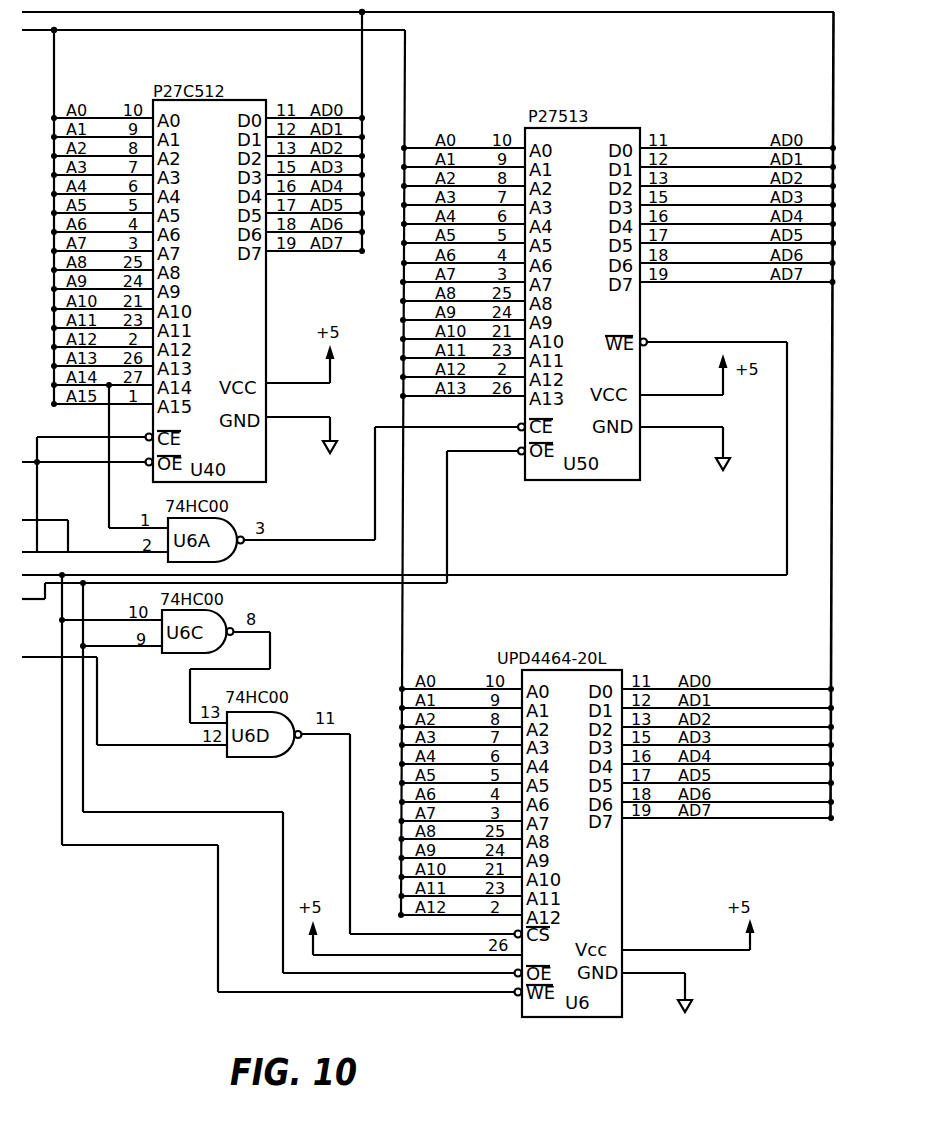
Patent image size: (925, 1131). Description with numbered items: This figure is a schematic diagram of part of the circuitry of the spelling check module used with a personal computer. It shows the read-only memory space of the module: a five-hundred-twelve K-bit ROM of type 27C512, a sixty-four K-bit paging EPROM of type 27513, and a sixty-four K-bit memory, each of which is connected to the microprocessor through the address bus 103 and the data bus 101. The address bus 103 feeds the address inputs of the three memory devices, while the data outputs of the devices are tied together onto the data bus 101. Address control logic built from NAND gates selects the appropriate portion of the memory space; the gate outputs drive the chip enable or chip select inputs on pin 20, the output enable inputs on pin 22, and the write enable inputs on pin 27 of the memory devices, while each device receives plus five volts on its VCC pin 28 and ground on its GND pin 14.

The data bus 101 is at (535, 12).
The address bus 103 is at (405, 91).
The VCC power pin 28 is at (510, 647).
The GND pin 14 is at (498, 705).
The chip enable / chip select pin 20 is at (281, 673).
The output enable pin 22 is at (273, 704).
The write enable pin 27 is at (424, 659).